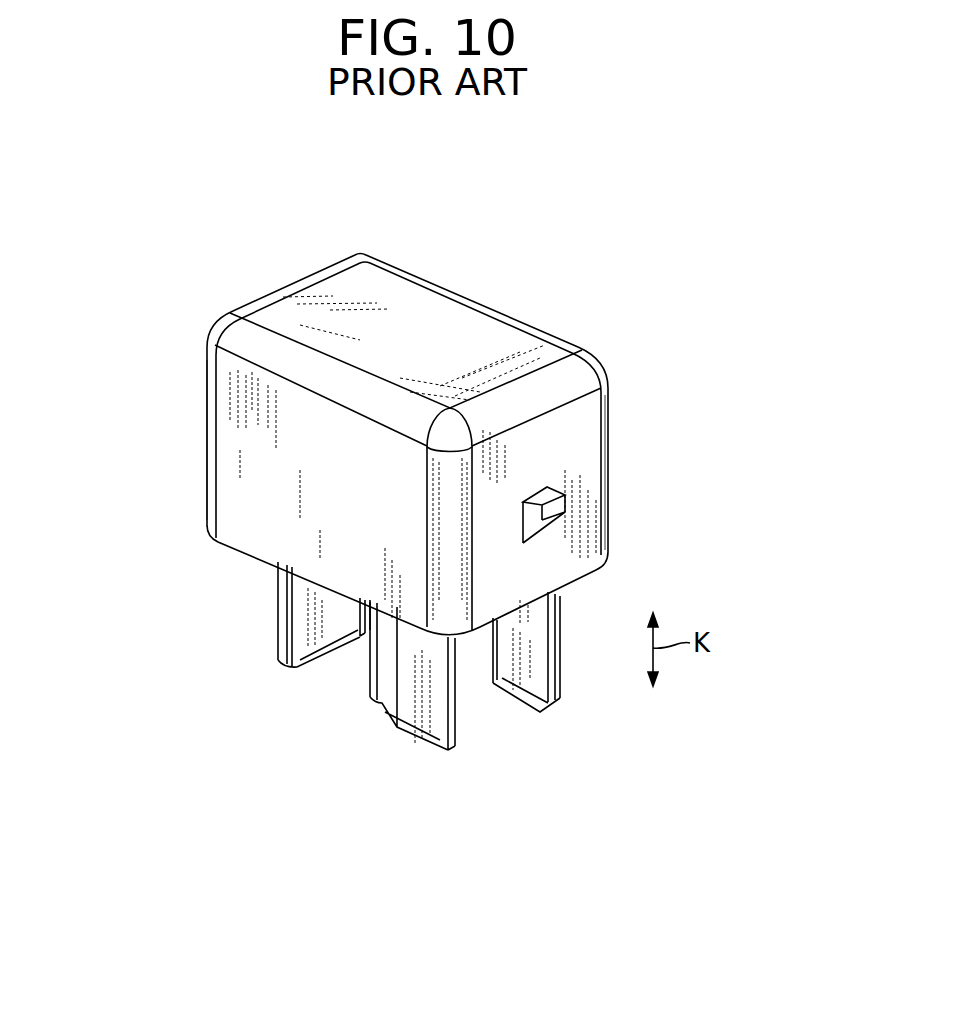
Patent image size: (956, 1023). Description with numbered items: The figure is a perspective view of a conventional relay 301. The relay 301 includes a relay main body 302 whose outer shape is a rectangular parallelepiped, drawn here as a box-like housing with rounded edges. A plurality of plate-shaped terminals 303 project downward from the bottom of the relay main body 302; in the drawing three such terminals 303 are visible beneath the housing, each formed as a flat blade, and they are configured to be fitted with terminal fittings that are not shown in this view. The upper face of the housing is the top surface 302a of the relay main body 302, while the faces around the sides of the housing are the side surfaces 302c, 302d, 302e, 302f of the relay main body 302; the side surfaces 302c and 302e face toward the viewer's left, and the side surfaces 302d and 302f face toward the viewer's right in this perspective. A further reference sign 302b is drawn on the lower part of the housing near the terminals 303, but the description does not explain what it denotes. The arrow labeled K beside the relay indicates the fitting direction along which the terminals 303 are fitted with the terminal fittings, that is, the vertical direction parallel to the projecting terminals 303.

The relay 301 is at (721, 247).
The relay main body 302 is at (505, 312).
The top surface 302a is at (413, 307).
The bottom face of housing 302b is at (361, 636).
The side surface 302c is at (203, 427).
The side surface 302d is at (597, 513).
The side surface 302e is at (310, 515).
The side surface 302f is at (610, 408).
The plate-shaped terminals 303 is at (297, 668).